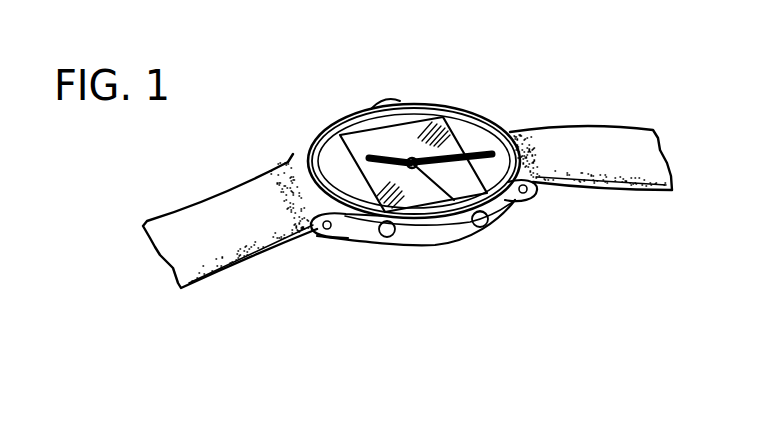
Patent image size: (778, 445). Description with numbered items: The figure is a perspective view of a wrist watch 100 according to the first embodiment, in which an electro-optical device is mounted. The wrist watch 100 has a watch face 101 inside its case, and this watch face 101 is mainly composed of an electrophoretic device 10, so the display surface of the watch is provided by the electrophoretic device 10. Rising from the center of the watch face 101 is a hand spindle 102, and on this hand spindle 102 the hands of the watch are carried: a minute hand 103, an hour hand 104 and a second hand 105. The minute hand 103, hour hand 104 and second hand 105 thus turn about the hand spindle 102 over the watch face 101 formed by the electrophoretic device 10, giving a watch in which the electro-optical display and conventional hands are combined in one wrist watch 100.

The wrist watch 100 is at (455, 98).
The watch face 101 is at (448, 150).
The electrophoretic device 10 is at (448, 150).
The hand spindle 102 is at (412, 170).
The minute hand 103 is at (467, 112).
The hour hand 104 is at (410, 157).
The second hand 105 is at (426, 176).